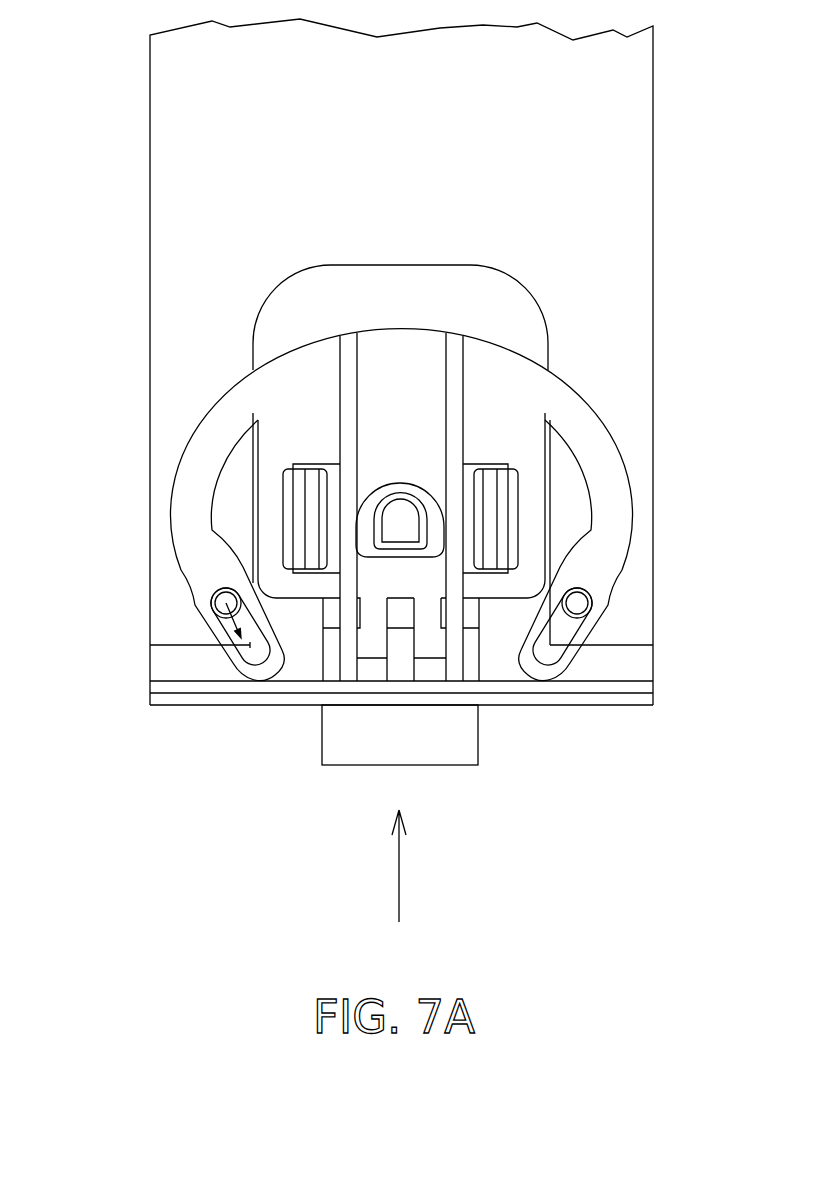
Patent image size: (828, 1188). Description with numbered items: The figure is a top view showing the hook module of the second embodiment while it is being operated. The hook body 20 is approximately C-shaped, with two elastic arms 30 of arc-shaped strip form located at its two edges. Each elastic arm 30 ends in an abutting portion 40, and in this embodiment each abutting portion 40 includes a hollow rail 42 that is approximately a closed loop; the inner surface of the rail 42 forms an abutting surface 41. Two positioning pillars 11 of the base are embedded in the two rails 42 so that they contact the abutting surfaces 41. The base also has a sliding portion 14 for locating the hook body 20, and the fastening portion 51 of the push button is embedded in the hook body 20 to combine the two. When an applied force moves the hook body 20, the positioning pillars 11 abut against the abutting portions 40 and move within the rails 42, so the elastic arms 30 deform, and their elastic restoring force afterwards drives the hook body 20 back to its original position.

The sliding portion 14 is at (382, 287).
The fastening portion 51 is at (400, 514).
The elastic arm 30 is at (618, 488).
The rail 42 is at (215, 596).
The positioning pillar 11 is at (578, 602).
The abutting surface 41 is at (263, 635).
The hook body 20 is at (340, 738).
The abutting portion 40 is at (568, 660).